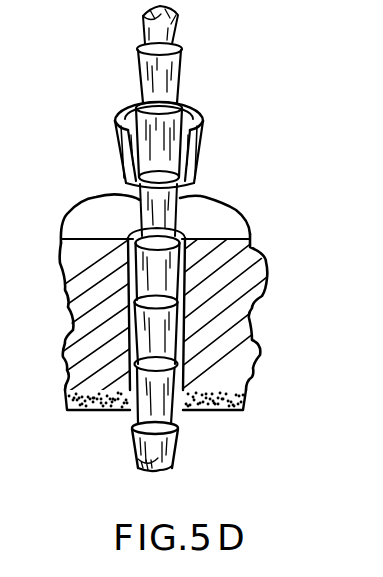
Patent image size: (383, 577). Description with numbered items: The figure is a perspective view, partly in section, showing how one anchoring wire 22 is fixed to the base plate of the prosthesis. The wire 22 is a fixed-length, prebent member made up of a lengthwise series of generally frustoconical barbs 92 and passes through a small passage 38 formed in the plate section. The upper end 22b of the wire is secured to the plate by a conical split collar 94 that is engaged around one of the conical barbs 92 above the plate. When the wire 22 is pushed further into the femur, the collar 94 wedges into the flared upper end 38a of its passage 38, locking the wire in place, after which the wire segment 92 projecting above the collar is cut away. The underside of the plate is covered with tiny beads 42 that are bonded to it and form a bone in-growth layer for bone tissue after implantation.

The anchoring wire 22 is at (178, 443).
The upper end of wire 22b is at (158, 146).
The conical split collar 94 is at (198, 147).
The frustoconical barb 92 is at (150, 213).
The passage 38 is at (83, 356).
The flared upper end of passage 38a is at (126, 278).
The beads 42 is at (78, 409).